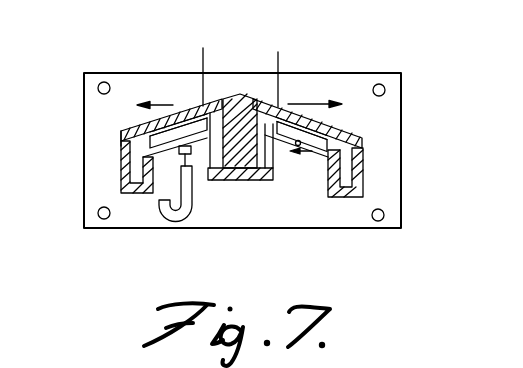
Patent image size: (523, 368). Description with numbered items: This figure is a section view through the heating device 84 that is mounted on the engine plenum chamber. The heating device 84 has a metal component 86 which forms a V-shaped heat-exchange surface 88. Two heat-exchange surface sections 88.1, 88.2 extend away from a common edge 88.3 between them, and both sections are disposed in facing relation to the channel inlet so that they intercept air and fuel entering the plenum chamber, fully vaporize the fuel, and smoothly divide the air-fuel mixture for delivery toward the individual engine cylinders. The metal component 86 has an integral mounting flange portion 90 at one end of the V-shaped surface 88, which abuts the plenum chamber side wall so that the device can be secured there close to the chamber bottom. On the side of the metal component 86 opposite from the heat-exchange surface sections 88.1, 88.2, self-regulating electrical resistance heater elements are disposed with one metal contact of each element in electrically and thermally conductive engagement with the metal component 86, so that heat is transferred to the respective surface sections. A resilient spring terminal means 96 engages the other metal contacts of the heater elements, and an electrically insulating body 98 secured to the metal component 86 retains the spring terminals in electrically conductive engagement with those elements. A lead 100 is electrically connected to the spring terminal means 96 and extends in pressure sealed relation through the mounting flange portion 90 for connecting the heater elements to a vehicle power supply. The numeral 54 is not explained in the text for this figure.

The piezoelectric layer 54 is at (141, 148).
The heating device 84 is at (403, 74).
The metal component 86 is at (366, 129).
The V-shaped heat-exchange surface 88 is at (275, 98).
The heat-exchange surface section 88.1 is at (228, 100).
The heat-exchange surface section 88.2 is at (358, 120).
The common edge 88.3 is at (265, 97).
The mounting flange portion 90 is at (107, 112).
The resilient spring terminal means 96 is at (118, 159).
The electrically insulating body 98 is at (353, 198).
The lead 100 is at (190, 208).